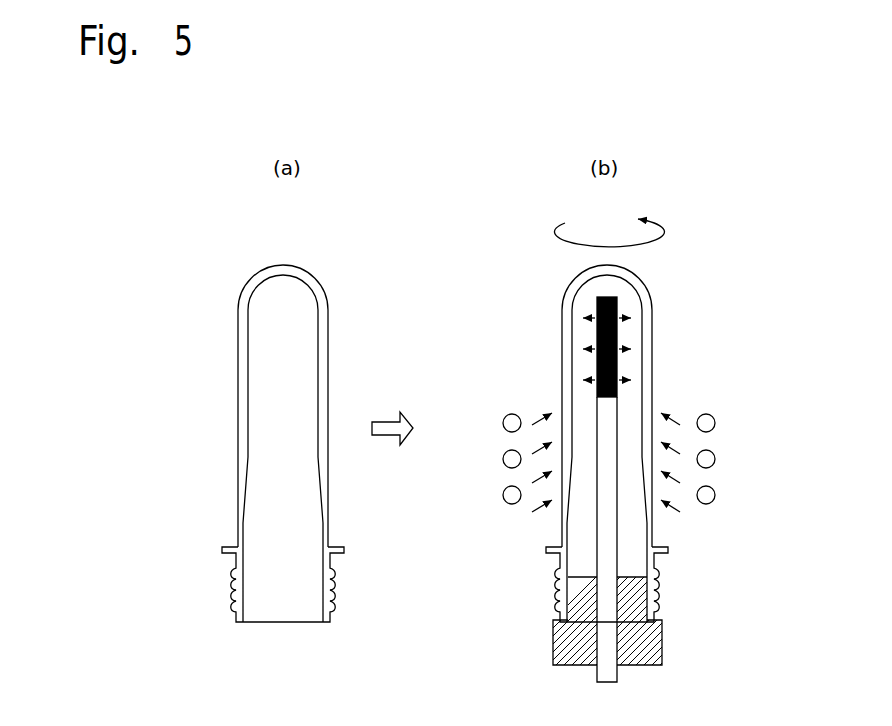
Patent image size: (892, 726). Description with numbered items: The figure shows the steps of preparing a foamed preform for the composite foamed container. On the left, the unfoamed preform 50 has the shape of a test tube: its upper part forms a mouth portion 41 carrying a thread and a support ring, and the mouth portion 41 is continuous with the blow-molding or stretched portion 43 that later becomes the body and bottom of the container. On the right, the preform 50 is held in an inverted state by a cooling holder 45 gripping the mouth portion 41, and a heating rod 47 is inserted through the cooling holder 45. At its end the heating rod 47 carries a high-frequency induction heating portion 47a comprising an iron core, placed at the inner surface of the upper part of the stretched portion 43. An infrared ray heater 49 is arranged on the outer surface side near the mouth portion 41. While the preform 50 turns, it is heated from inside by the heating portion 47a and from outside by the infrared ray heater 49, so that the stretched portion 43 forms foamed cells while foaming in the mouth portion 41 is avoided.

The preform 50 is at (444, 448).
The blow-molding portion 43 is at (322, 357).
The mouth portion 41 is at (232, 594).
The heating rod 47 is at (615, 489).
The high-frequency induction heating portion 47a is at (597, 333).
The cooling holder 45 is at (650, 643).
The infrared ray heater 49 is at (716, 423).